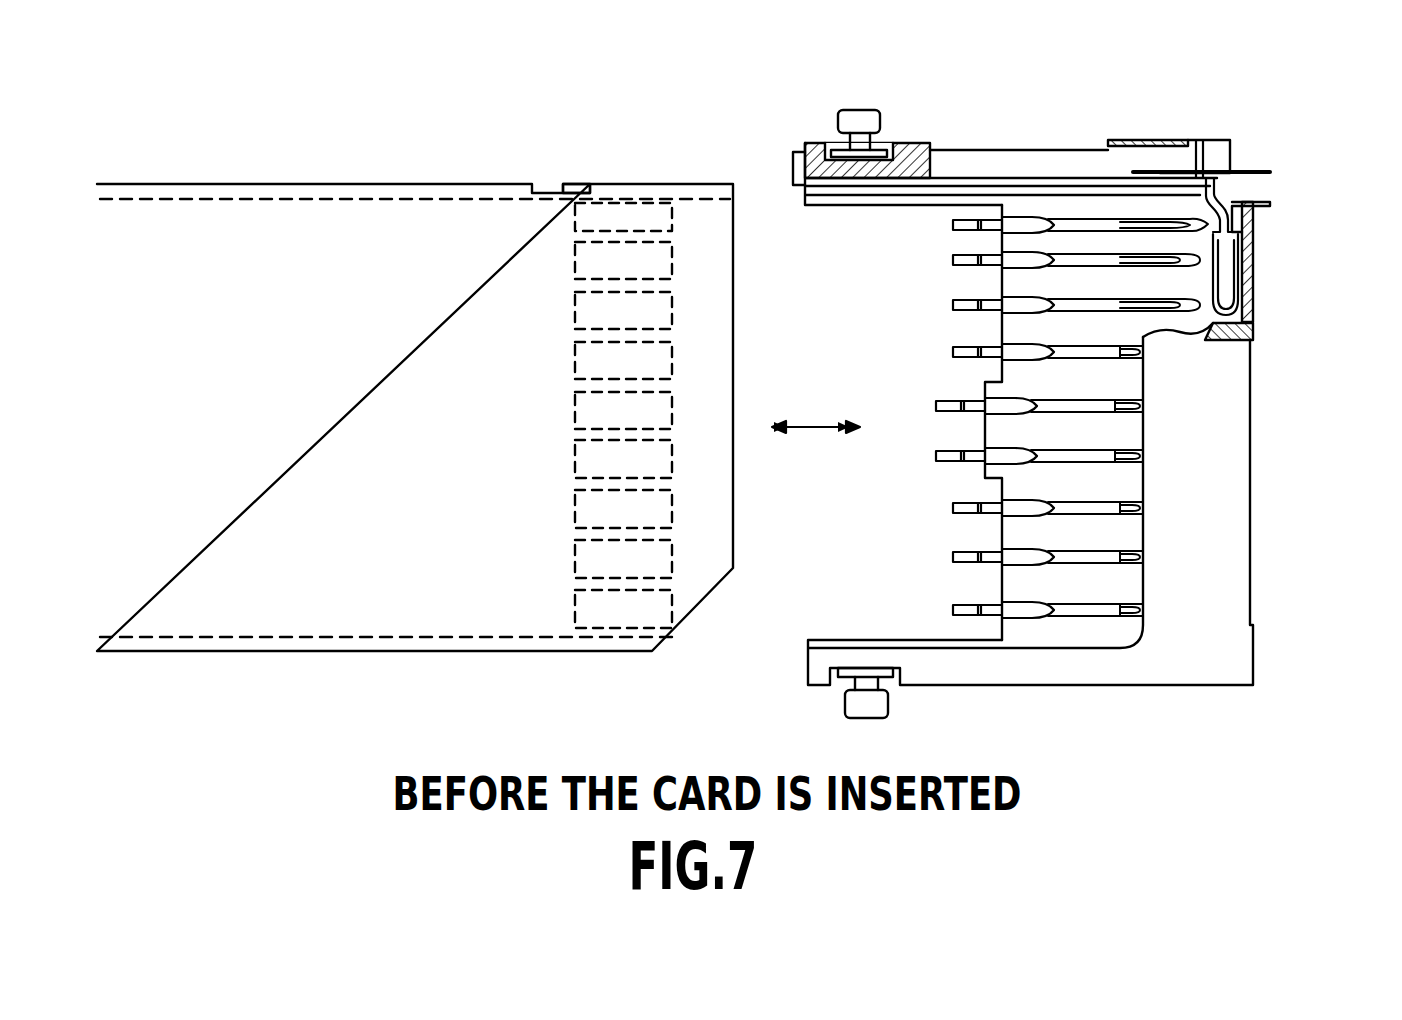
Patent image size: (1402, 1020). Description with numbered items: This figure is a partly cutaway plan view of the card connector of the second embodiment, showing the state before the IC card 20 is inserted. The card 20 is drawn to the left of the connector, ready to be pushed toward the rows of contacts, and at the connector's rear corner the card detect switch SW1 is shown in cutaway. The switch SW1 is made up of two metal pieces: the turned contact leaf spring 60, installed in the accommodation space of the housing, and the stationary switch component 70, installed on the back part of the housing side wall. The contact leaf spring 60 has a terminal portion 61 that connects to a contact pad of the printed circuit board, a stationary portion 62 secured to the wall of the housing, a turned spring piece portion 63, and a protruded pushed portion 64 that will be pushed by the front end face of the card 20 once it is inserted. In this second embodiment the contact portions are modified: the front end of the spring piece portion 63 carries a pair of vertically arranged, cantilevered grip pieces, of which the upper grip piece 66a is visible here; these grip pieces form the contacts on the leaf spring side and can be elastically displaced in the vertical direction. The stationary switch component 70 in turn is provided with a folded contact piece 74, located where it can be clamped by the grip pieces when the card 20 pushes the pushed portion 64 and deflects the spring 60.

The IC card 20 is at (386, 235).
The contact leaf spring 60 is at (1253, 332).
The terminal portion 61 is at (1254, 202).
The stationary portion 62 is at (1240, 247).
The spring piece portion 63 is at (1202, 340).
The protruded pushed portion 64 is at (1178, 216).
The grip piece 66a is at (1206, 200).
The stationary switch component 70 is at (1268, 170).
The folded contact piece 74 is at (1230, 190).
The card detect switch SW1 is at (1282, 188).